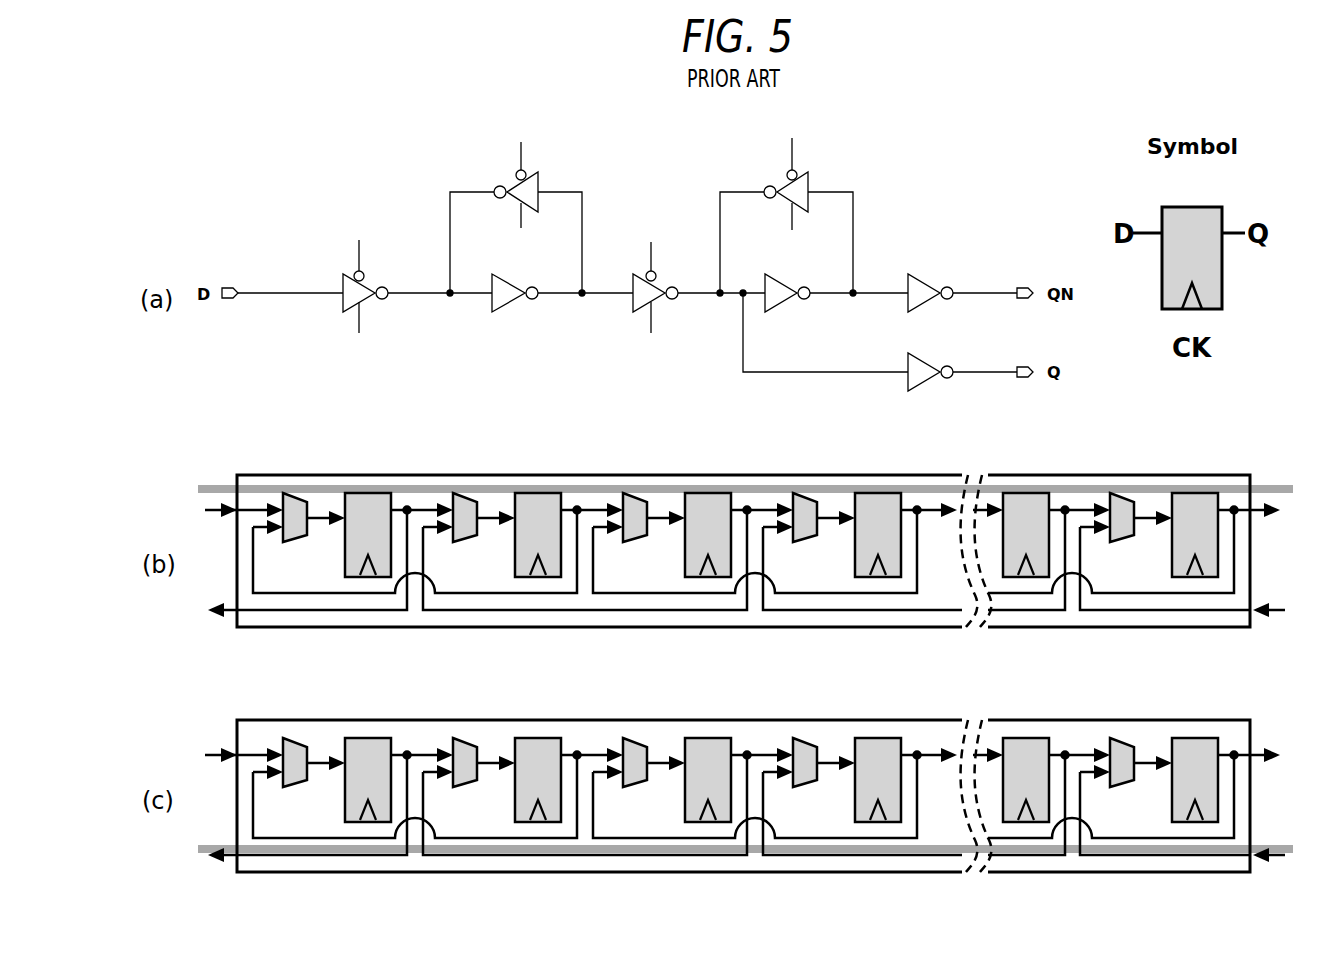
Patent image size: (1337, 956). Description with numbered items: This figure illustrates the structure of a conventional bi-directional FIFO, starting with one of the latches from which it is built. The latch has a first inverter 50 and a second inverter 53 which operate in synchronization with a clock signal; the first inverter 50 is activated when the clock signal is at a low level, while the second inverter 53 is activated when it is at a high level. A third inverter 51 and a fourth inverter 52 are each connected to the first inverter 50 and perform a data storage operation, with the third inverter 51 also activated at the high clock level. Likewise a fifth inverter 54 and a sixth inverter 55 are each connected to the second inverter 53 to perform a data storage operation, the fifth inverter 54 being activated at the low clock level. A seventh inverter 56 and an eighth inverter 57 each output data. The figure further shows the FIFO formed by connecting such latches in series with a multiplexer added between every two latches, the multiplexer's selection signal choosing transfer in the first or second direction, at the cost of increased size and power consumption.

The first inverter 50 is at (343, 280).
The third inverter 51 is at (539, 186).
The fourth inverter 52 is at (503, 274).
The second inverter 53 is at (635, 313).
The fifth inverter 54 is at (811, 180).
The sixth inverter 55 is at (787, 300).
The seventh inverter 56 is at (922, 282).
The eighth inverter 57 is at (925, 385).